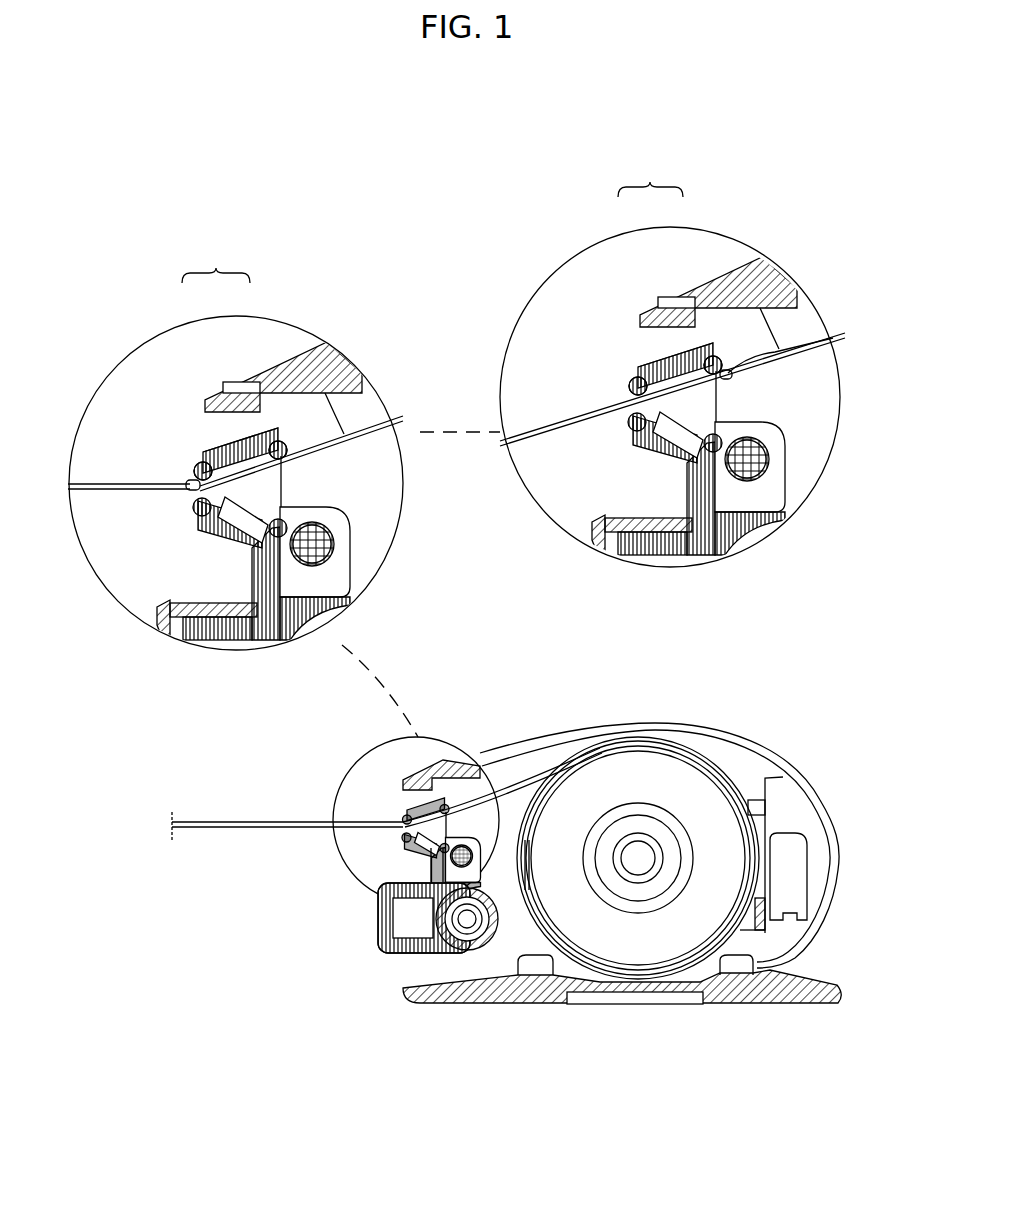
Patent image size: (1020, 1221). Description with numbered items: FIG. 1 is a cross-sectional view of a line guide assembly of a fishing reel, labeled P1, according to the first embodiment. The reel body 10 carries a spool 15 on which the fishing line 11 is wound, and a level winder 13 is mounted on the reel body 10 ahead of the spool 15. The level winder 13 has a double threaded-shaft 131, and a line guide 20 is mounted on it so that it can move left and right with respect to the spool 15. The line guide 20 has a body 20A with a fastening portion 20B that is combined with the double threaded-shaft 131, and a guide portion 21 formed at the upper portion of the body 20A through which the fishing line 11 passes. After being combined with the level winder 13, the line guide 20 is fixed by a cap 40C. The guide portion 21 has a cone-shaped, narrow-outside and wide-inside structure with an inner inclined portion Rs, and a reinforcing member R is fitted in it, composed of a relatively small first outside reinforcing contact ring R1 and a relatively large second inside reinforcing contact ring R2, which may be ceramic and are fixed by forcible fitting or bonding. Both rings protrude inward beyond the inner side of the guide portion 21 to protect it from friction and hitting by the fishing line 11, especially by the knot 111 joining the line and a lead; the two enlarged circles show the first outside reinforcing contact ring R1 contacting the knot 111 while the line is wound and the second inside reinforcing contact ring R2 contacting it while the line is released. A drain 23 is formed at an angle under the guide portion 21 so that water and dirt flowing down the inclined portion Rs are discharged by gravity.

The position P1 is at (146, 97).
The reel body 10 is at (688, 710).
The fishing line 11 is at (333, 395).
The knot 111 is at (193, 479).
The level winder 13 is at (452, 900).
The double threaded-shaft 131 is at (467, 924).
The spool 15 is at (707, 790).
The line guide 20 is at (165, 518).
The body 20A is at (436, 862).
The fastening portion 20B is at (540, 985).
The guide portion 21 is at (223, 500).
The drain 23 is at (242, 530).
The cap 40C is at (378, 940).
The reinforcing member R is at (432, 218).
The first outside reinforcing contact ring R1 is at (201, 462).
The second inside reinforcing contact ring R2 is at (280, 441).
The inner inclined portion Rs is at (240, 458).